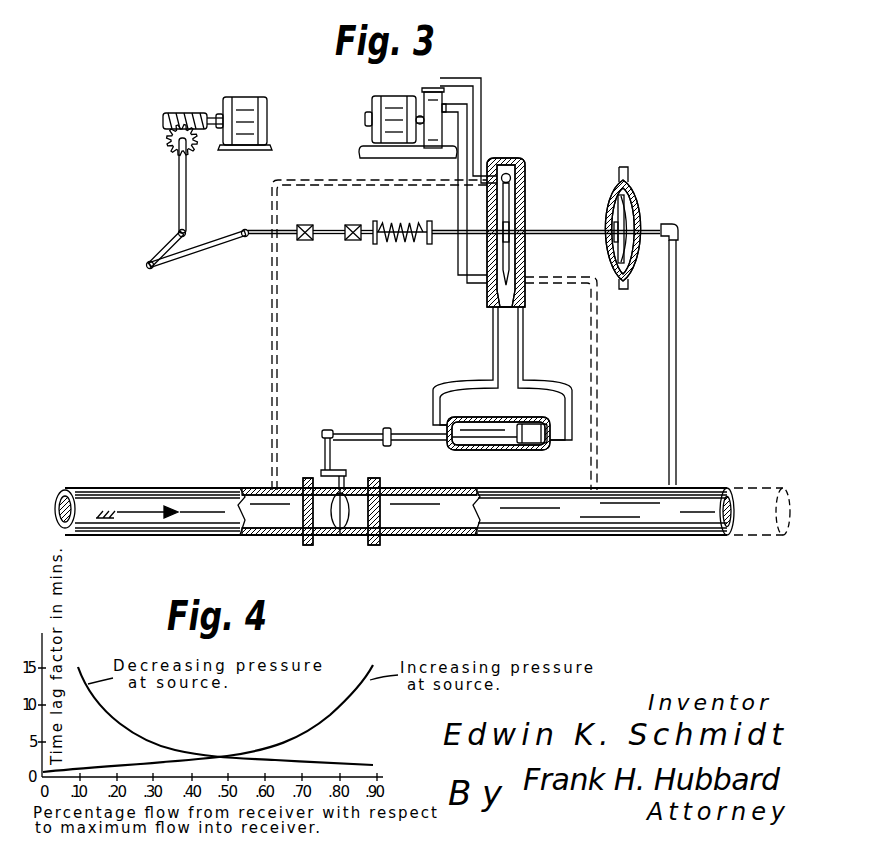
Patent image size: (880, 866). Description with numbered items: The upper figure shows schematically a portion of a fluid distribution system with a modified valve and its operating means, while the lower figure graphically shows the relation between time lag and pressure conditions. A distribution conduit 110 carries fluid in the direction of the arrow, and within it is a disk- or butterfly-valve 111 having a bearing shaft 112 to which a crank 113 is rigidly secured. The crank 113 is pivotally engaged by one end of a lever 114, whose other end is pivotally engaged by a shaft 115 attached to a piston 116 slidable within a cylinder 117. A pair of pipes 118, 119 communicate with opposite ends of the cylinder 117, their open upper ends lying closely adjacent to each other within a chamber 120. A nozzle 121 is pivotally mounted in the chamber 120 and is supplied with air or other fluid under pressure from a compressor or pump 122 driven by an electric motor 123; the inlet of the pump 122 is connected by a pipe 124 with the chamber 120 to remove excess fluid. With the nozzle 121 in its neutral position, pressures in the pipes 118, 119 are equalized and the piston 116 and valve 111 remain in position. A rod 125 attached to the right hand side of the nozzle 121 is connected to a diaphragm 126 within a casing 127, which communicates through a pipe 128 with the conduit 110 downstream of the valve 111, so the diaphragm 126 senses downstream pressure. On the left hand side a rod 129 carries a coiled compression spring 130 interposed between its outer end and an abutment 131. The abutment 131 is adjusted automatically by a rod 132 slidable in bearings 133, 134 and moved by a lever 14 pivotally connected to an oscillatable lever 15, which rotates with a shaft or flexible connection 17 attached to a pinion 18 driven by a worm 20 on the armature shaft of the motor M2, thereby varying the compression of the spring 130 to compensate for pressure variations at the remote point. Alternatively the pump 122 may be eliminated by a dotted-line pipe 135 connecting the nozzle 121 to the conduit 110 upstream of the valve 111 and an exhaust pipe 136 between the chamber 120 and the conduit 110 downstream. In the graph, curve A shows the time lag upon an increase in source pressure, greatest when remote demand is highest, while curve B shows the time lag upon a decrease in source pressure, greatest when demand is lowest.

In FIG. 3, the motor M2 is at (243, 97).
In FIG. 3, the worm 20 is at (163, 121).
In FIG. 3, the pinion 18 is at (167, 147).
In FIG. 3, the shaft or flexible connection 17 is at (187, 180).
In FIG. 3, the oscillatable lever 15 is at (166, 246).
In FIG. 3, the lever 14 is at (195, 257).
In FIG. 3, the rod 132 is at (263, 230).
In FIG. 3, the bearing 133 is at (304, 225).
In FIG. 3, the bearing 134 is at (349, 225).
In FIG. 3, the abutment 131 is at (376, 221).
In FIG. 3, the coiled compression spring 130 is at (400, 246).
In FIG. 3, the rod 129 is at (447, 229).
In FIG. 3, the electric motor 123 is at (370, 113).
In FIG. 3, the compressor or pump 122 is at (431, 108).
In FIG. 3, the pipe 124 is at (458, 263).
In FIG. 3, the chamber 120 is at (520, 250).
In FIG. 3, the nozzle 121 is at (510, 194).
In FIG. 3, the rod 125 is at (584, 229).
In FIG. 3, the diaphragm 126 is at (638, 192).
In FIG. 3, the casing 127 is at (647, 207).
In FIG. 3, the pipe 128 is at (677, 326).
In FIG. 3, the pipe 135 is at (279, 331).
In FIG. 3, the exhaust pipe 136 is at (598, 373).
In FIG. 3, the pipe 119 is at (493, 356).
In FIG. 3, the pipe 118 is at (523, 356).
In FIG. 3, the piston 116 is at (483, 451).
In FIG. 3, the cylinder 117 is at (543, 452).
In FIG. 3, the lever 114 is at (356, 433).
In FIG. 3, the shaft 115 is at (419, 433).
In FIG. 3, the crank 113 is at (324, 456).
In FIG. 3, the bearing shaft 112 is at (346, 478).
In FIG. 3, the distribution conduit 110 is at (517, 536).
In FIG. 3, the disk- or butterfly-valve 111 is at (346, 529).
In FIG. 4, the curve A is at (342, 712).
In FIG. 4, the curve B is at (121, 723).